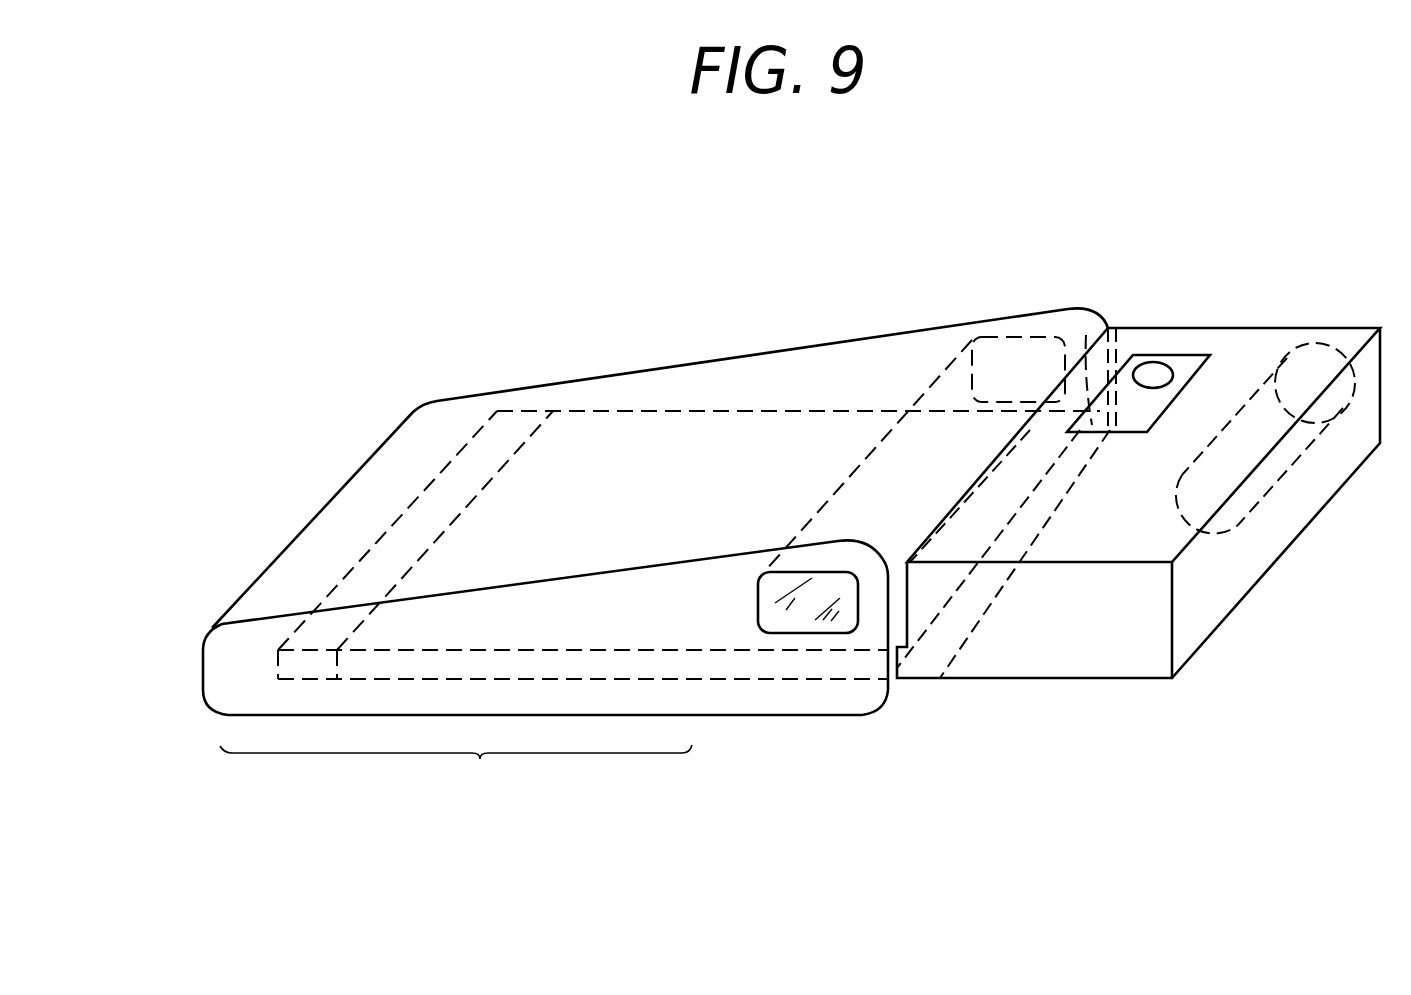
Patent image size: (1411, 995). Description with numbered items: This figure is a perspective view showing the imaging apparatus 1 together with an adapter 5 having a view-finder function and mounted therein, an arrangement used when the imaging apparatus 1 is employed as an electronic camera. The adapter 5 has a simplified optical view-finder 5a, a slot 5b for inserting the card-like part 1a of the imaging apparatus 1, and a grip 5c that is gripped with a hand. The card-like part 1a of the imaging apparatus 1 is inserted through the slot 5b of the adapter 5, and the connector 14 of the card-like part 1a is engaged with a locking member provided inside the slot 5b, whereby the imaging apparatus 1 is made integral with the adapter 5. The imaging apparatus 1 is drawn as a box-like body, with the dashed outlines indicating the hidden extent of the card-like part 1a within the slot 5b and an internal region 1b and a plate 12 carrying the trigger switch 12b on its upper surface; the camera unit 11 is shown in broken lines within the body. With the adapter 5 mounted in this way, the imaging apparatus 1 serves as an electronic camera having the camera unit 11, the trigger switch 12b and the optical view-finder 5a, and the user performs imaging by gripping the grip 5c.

The imaging apparatus 1 is at (1068, 668).
The card-like part 1a is at (706, 433).
The side wall portion 1b is at (1336, 338).
The adapter 5 is at (602, 481).
The optical view-finder 5a is at (920, 438).
The slot 5b is at (1086, 335).
The grip 5c is at (456, 769).
The camera unit 11 is at (1252, 520).
The mounting plate 12 is at (1157, 355).
The trigger switch 12b is at (1176, 372).
The connector 14 is at (432, 510).